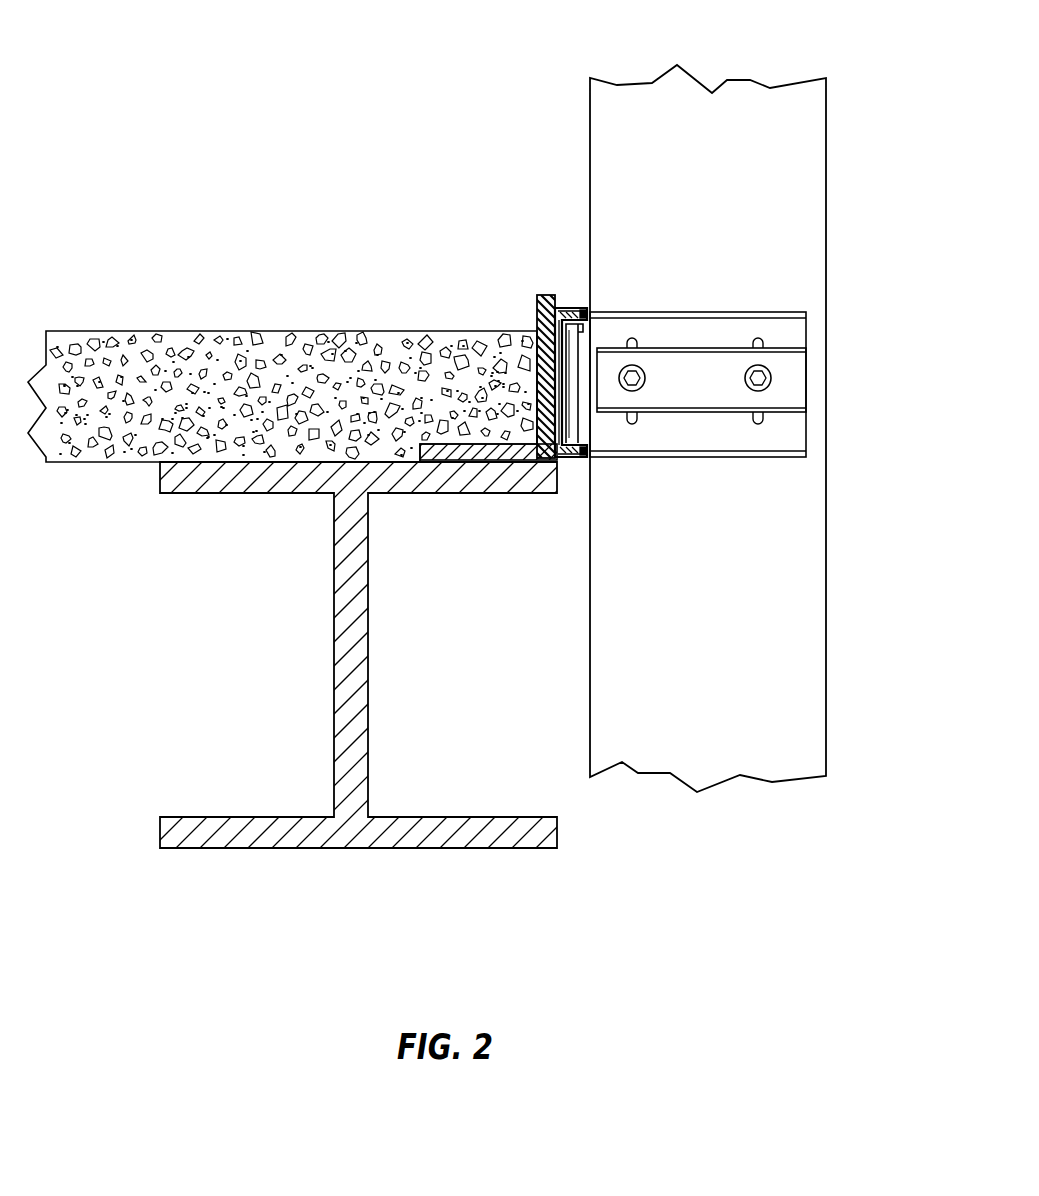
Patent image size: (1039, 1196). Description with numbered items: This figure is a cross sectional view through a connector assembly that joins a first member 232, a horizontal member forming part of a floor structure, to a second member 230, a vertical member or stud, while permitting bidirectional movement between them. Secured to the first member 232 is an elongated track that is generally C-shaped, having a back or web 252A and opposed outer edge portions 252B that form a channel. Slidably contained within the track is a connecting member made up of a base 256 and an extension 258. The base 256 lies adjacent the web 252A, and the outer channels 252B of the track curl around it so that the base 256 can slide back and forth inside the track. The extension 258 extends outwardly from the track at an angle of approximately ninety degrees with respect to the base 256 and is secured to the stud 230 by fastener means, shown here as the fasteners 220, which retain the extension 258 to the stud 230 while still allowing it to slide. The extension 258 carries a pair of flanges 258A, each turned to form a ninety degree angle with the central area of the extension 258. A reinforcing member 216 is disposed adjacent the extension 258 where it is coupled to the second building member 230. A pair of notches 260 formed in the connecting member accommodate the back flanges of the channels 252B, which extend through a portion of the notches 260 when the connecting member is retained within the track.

The reinforcing member 216 is at (788, 368).
The bolt 220 is at (632, 372).
The second member 230 is at (793, 692).
The first member 232 is at (470, 450).
The web 252A is at (537, 345).
The outer edge portions 252B is at (572, 307).
The base 256 is at (570, 415).
The extension 258 is at (755, 383).
The flanges 258A is at (738, 312).
The notches 260 is at (765, 343).